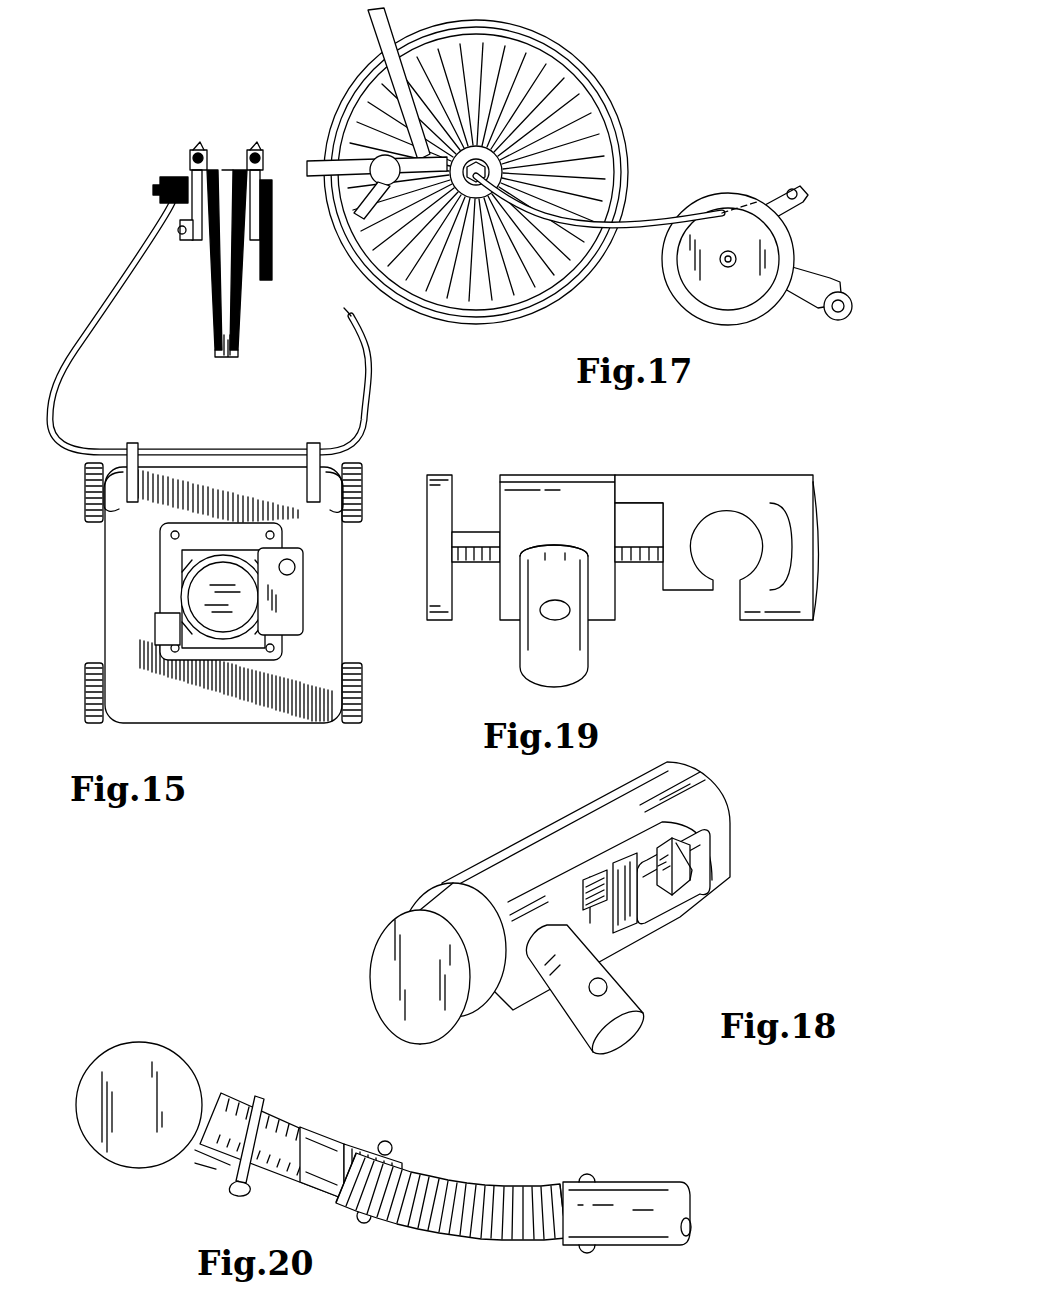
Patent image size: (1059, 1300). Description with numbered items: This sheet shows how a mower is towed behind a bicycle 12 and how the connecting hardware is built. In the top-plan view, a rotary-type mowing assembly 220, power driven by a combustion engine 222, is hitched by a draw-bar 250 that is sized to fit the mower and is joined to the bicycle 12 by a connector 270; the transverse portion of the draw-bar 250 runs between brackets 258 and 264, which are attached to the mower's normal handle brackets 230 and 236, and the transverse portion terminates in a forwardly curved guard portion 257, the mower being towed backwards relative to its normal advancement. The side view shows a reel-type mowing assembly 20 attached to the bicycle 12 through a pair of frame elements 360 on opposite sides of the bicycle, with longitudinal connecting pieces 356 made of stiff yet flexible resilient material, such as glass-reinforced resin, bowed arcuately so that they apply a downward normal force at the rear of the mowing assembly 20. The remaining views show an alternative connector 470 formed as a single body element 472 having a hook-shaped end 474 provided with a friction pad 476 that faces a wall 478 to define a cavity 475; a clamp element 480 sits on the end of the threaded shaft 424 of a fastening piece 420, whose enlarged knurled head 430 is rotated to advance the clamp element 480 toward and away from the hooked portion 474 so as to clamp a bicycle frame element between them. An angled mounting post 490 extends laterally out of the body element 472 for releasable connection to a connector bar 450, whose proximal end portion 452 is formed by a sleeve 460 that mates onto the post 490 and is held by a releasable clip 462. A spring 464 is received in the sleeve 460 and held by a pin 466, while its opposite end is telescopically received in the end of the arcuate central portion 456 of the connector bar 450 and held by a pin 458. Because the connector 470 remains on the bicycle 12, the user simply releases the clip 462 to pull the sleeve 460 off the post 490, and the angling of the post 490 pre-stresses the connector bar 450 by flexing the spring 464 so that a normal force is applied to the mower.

In FIG. 15, the bicycle 12 is at (258, 311).
In FIG. 17, the bicycle 12 is at (642, 102).
In FIG. 17, the mowing assembly 20 is at (722, 181).
In FIG. 15, the rotary-type mowing assembly 220 is at (310, 645).
In FIG. 15, the engine 222 is at (183, 600).
In FIG. 15, the handle bracket 230 is at (122, 552).
In FIG. 15, the handle bracket 236 is at (340, 527).
In FIG. 15, the draw-bar 250 is at (133, 283).
In FIG. 15, the forwardly curved guard portion 257 is at (373, 368).
In FIG. 15, the bracket 258 is at (415, 488).
In FIG. 15, the bracket 264 is at (188, 445).
In FIG. 15, the connector 270 is at (150, 191).
In FIG. 17, the longitudinal connecting piece 356 is at (641, 230).
In FIG. 17, the frame element 360 is at (330, 161).
In FIG. 19, the fastening piece 420 is at (418, 495).
In FIG. 18, the fastening piece 420 is at (385, 960).
In FIG. 19, the threaded shaft 424 is at (643, 520).
In FIG. 19, the enlarged knurled head 430 is at (437, 622).
In FIG. 18, the enlarged knurled head 430 is at (400, 905).
In FIG. 20, the enlarged knurled head 430 is at (162, 1118).
In FIG. 20, the connector bar 450 is at (648, 1189).
In FIG. 20, the proximal end portion 452 is at (360, 1114).
In FIG. 20, the arcuate central portion 456 is at (641, 1182).
In FIG. 20, the pin 458 is at (590, 1250).
In FIG. 20, the sleeve 460 is at (280, 1182).
In FIG. 20, the releasable clip 462 is at (274, 1128).
In FIG. 20, the spring 464 is at (458, 1186).
In FIG. 20, the pin 466 is at (358, 1218).
In FIG. 19, the connector 470 is at (632, 548).
In FIG. 18, the connector 470 is at (555, 888).
In FIG. 20, the connector 470 is at (404, 1132).
In FIG. 18, the body element 472 is at (497, 865).
In FIG. 19, the hook-shaped end 474 is at (795, 595).
In FIG. 18, the hook-shaped end 474 is at (718, 830).
In FIG. 19, the cavity 475 is at (718, 628).
In FIG. 18, the cavity 475 is at (665, 940).
In FIG. 19, the friction pad 476 is at (757, 518).
In FIG. 18, the friction pad 476 is at (688, 876).
In FIG. 19, the wall 478 is at (615, 603).
In FIG. 19, the clamp element 480 is at (688, 515).
In FIG. 18, the clamp element 480 is at (623, 920).
In FIG. 18, the angled mounting post 490 is at (628, 1033).
In FIG. 20, the angled mounting post 490 is at (217, 1092).